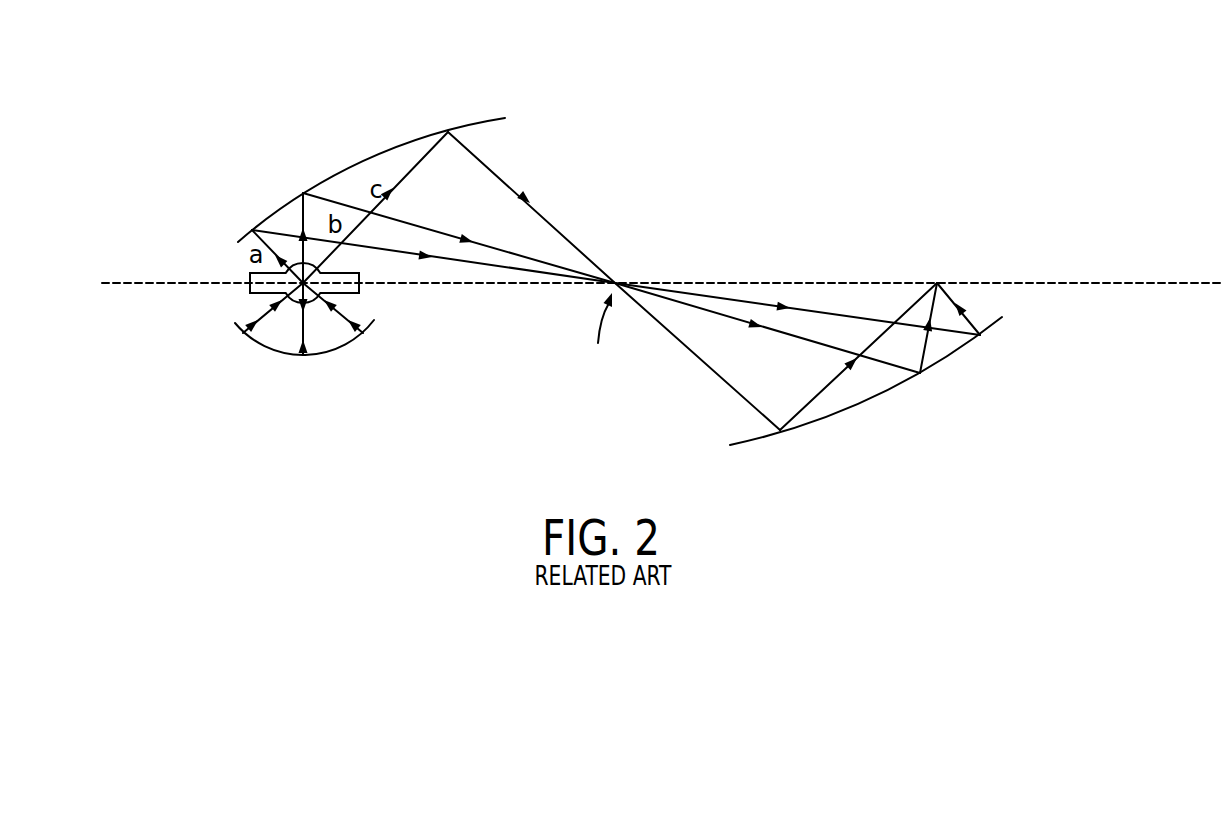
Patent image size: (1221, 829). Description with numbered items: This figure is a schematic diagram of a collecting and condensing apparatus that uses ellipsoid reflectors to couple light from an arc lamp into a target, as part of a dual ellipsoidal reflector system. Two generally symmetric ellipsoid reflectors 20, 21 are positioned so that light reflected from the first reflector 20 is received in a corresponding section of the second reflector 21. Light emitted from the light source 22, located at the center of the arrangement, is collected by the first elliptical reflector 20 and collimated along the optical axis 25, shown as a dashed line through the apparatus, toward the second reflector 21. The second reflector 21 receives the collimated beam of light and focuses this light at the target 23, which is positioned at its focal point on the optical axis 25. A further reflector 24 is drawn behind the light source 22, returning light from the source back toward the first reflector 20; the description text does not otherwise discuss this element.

The first elliptical reflector 20 is at (405, 126).
The second reflector 21 is at (860, 437).
The light source 22 is at (235, 291).
The target 23 is at (935, 268).
The rear reflector mirror 24 is at (318, 372).
The optical axis 25 is at (1145, 310).